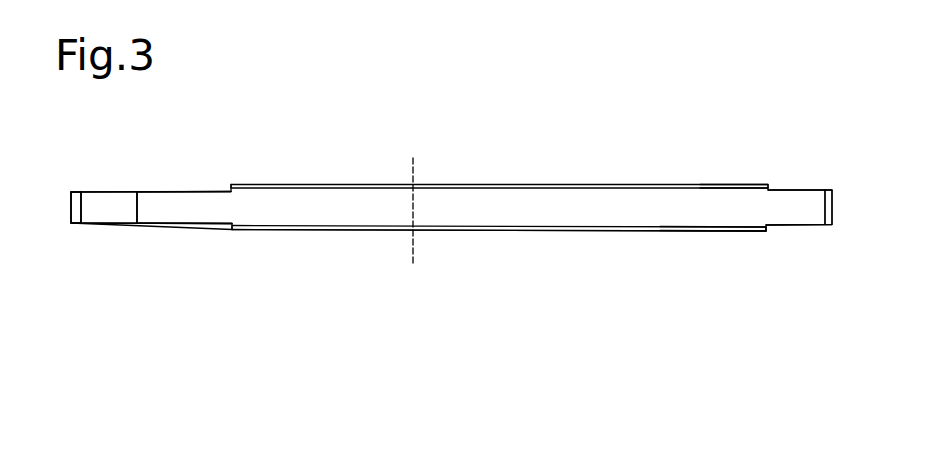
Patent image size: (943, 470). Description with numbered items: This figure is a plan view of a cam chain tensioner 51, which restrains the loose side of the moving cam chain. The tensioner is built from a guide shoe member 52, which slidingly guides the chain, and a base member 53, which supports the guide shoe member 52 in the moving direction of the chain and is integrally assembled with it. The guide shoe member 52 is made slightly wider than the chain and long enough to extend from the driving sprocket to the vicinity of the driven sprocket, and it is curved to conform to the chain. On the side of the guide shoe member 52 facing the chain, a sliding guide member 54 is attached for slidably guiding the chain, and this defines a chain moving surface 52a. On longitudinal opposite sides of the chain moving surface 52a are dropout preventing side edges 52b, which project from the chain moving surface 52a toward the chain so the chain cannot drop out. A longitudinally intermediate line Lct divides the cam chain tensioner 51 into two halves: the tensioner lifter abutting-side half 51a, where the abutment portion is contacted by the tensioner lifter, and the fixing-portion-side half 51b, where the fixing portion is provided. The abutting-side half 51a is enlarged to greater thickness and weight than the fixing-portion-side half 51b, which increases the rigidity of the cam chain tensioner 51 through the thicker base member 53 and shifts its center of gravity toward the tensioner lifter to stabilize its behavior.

The cam chain tensioner 51 is at (482, 151).
The tensioner lifter abutting-side half 51a is at (624, 176).
The fixing-portion-side half 51b is at (278, 173).
The guide shoe member 52 is at (357, 185).
The chain moving surface 52a is at (548, 210).
The dropout preventing side edge 52b is at (737, 188).
The base member 53 is at (73, 212).
The sliding guide member 54 is at (183, 210).
The longitudinally intermediate line Lct is at (410, 199).